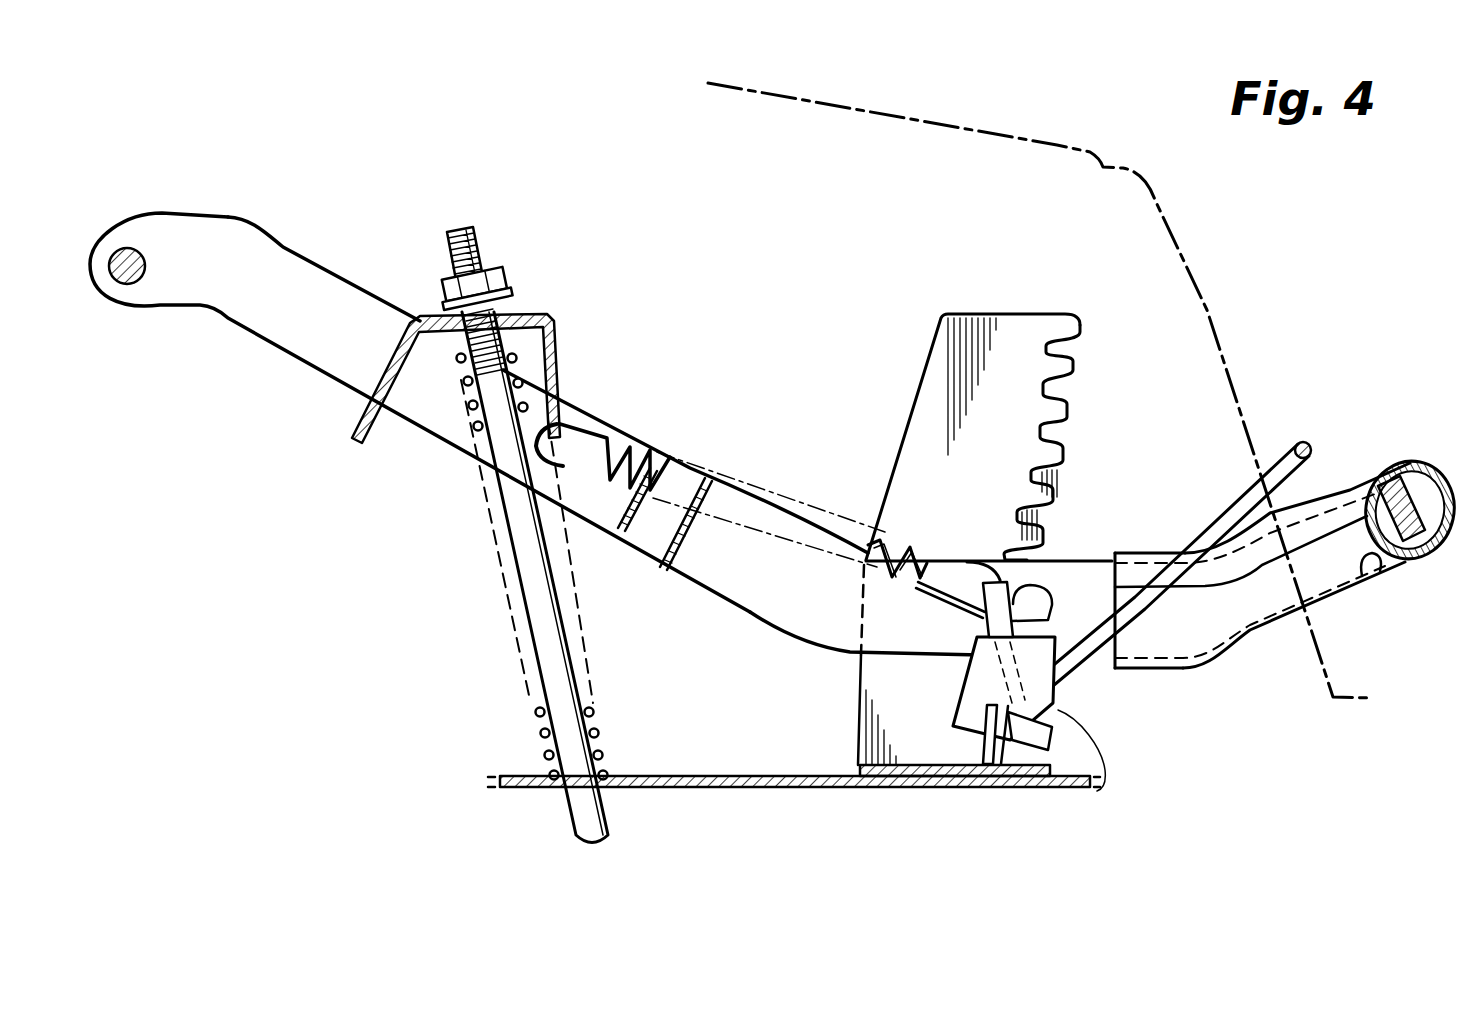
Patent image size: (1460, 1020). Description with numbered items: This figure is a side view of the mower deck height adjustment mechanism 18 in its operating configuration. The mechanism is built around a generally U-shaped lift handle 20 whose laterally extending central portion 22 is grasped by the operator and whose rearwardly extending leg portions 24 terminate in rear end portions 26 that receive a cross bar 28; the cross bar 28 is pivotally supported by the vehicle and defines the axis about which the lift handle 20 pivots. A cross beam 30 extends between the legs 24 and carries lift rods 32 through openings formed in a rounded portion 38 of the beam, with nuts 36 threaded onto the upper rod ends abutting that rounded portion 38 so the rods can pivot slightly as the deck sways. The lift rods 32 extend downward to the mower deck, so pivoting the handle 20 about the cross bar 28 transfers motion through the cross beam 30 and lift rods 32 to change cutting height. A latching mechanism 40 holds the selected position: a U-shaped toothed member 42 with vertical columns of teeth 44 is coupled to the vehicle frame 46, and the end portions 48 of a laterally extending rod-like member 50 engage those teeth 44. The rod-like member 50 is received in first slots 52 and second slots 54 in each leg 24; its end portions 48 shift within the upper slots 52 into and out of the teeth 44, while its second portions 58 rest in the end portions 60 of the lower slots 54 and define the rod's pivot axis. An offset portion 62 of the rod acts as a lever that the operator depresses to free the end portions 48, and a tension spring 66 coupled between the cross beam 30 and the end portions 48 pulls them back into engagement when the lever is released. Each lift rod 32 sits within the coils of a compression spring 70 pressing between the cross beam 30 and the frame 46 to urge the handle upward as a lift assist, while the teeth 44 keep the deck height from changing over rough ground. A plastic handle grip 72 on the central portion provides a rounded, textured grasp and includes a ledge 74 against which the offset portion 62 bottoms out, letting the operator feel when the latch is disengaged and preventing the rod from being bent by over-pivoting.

The height adjustment mechanism 18 is at (1292, 266).
The lift handle 20 is at (746, 620).
The laterally extending central portion 22 is at (1446, 466).
The leg portions 24 is at (663, 567).
The rear end portions 26 is at (168, 210).
The cross bar 28 is at (147, 267).
The cross beam 30 is at (560, 322).
The lift rods 32 is at (506, 585).
The nuts 36 is at (488, 283).
The rounded portion 38 is at (500, 296).
The latching mechanism 40 is at (1110, 492).
The toothed member 42 is at (1028, 312).
The teeth 44 is at (1080, 363).
The frame 46 is at (703, 790).
The end portions 48 is at (943, 600).
The rod-like member 50 is at (1204, 511).
The first slots 52 is at (1046, 585).
The second slots 54 is at (1056, 714).
The second portions 58 is at (1004, 772).
The end portions of the lower slots 60 is at (1096, 791).
The offset portion 62 is at (1289, 454).
The tension spring 66 is at (780, 490).
The compression spring 70 is at (476, 431).
The plastic handle grip 72 is at (1407, 568).
The ledge 74 is at (1372, 580).